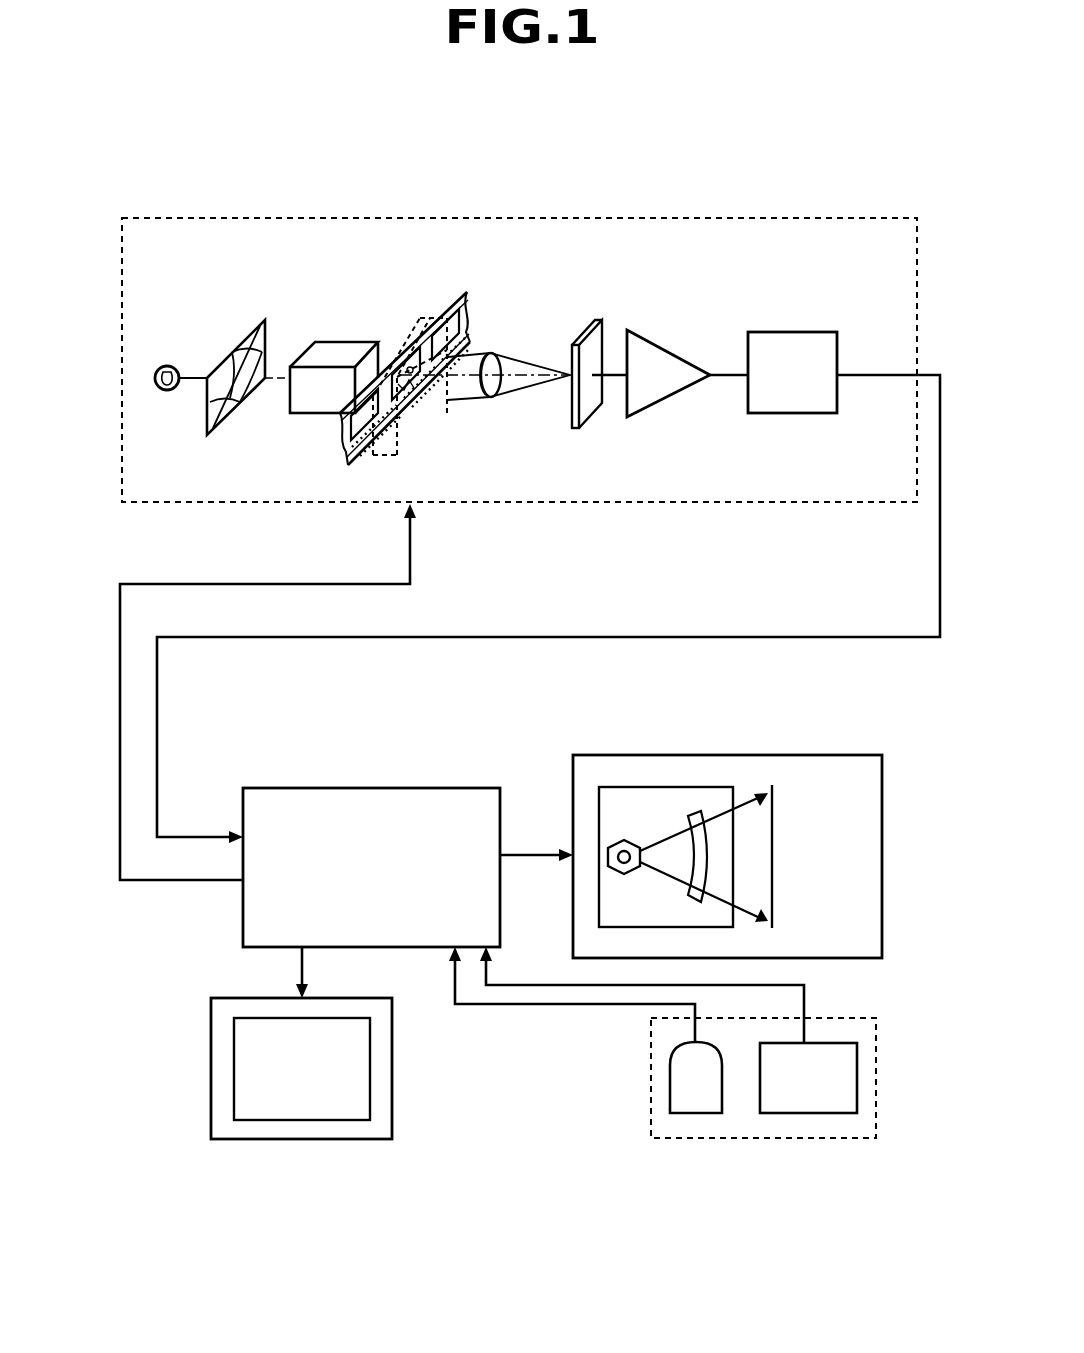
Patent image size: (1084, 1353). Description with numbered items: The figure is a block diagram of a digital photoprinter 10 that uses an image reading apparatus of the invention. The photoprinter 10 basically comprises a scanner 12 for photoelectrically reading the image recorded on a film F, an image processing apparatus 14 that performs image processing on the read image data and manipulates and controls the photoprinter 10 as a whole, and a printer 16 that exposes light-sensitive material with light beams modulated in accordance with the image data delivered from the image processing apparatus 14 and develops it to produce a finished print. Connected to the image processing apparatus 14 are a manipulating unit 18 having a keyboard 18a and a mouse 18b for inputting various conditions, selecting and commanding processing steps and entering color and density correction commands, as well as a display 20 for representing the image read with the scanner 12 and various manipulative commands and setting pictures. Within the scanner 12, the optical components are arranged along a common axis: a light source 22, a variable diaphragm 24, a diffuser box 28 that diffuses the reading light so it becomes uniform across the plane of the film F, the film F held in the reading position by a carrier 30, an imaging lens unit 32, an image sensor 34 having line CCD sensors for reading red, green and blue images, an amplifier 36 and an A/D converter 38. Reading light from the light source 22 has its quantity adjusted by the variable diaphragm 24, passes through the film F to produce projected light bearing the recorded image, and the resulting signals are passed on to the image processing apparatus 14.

The digital photoprinter 10 is at (800, 180).
The scanner 12 is at (345, 217).
The image processing apparatus 14 is at (368, 787).
The printer 16 is at (720, 754).
The manipulating unit 18 is at (743, 1140).
The keyboard 18a is at (809, 1114).
The mouse 18b is at (688, 1114).
The display 20 is at (288, 1142).
The light source 22 is at (165, 360).
The variable diaphragm 24 is at (238, 345).
The diffuser box 28 is at (333, 357).
The carrier 30 is at (430, 416).
The imaging lens unit 32 is at (490, 352).
The image sensor 34 is at (593, 343).
The amplifier 36 is at (668, 401).
The A/D converter 38 is at (835, 332).
The film F is at (455, 296).